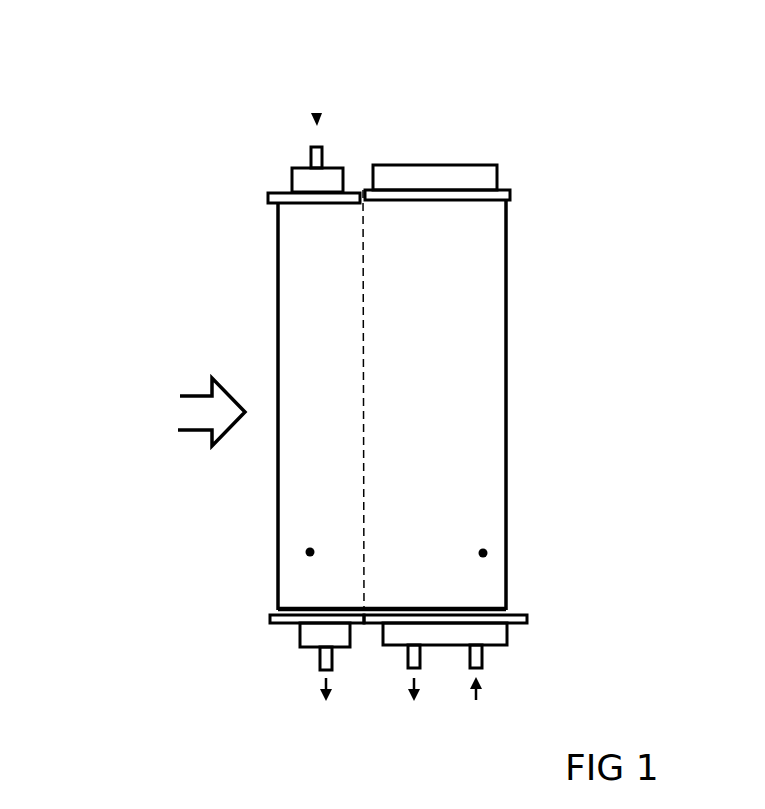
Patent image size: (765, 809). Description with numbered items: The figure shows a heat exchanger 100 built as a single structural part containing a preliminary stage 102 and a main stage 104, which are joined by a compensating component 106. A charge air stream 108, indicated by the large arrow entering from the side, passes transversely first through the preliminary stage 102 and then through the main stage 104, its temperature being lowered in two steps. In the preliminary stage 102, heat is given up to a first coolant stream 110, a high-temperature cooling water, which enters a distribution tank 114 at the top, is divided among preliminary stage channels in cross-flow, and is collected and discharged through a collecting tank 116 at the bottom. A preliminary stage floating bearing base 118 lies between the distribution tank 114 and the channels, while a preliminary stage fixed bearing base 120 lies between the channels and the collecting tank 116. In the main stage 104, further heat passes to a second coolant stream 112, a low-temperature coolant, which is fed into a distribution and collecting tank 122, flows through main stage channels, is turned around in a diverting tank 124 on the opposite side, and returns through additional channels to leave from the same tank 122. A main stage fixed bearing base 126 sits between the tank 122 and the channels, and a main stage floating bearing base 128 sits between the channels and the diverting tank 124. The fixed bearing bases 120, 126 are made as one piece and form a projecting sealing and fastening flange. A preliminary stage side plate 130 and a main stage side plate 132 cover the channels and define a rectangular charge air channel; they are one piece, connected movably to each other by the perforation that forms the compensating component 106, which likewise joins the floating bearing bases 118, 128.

The heat exchanger 100 is at (555, 389).
The preliminary stage 102 is at (287, 342).
The main stage 104 is at (498, 343).
The compensating component 106 is at (367, 155).
The charge air stream 108 is at (180, 397).
The first coolant stream 110 is at (312, 113).
The second coolant stream 112 is at (470, 700).
The distribution tank 114 is at (297, 168).
The collecting tank 116 is at (298, 645).
The preliminary stage floating bearing base 118 is at (268, 195).
The preliminary stage fixed bearing base 120 is at (267, 615).
The distribution and collecting tank 122 is at (512, 635).
The diverting tank 124 is at (487, 163).
The main stage fixed bearing base 126 is at (535, 608).
The main stage floating bearing base 128 is at (513, 197).
The preliminary stage side plate 130 is at (310, 552).
The main stage side plate 132 is at (483, 553).